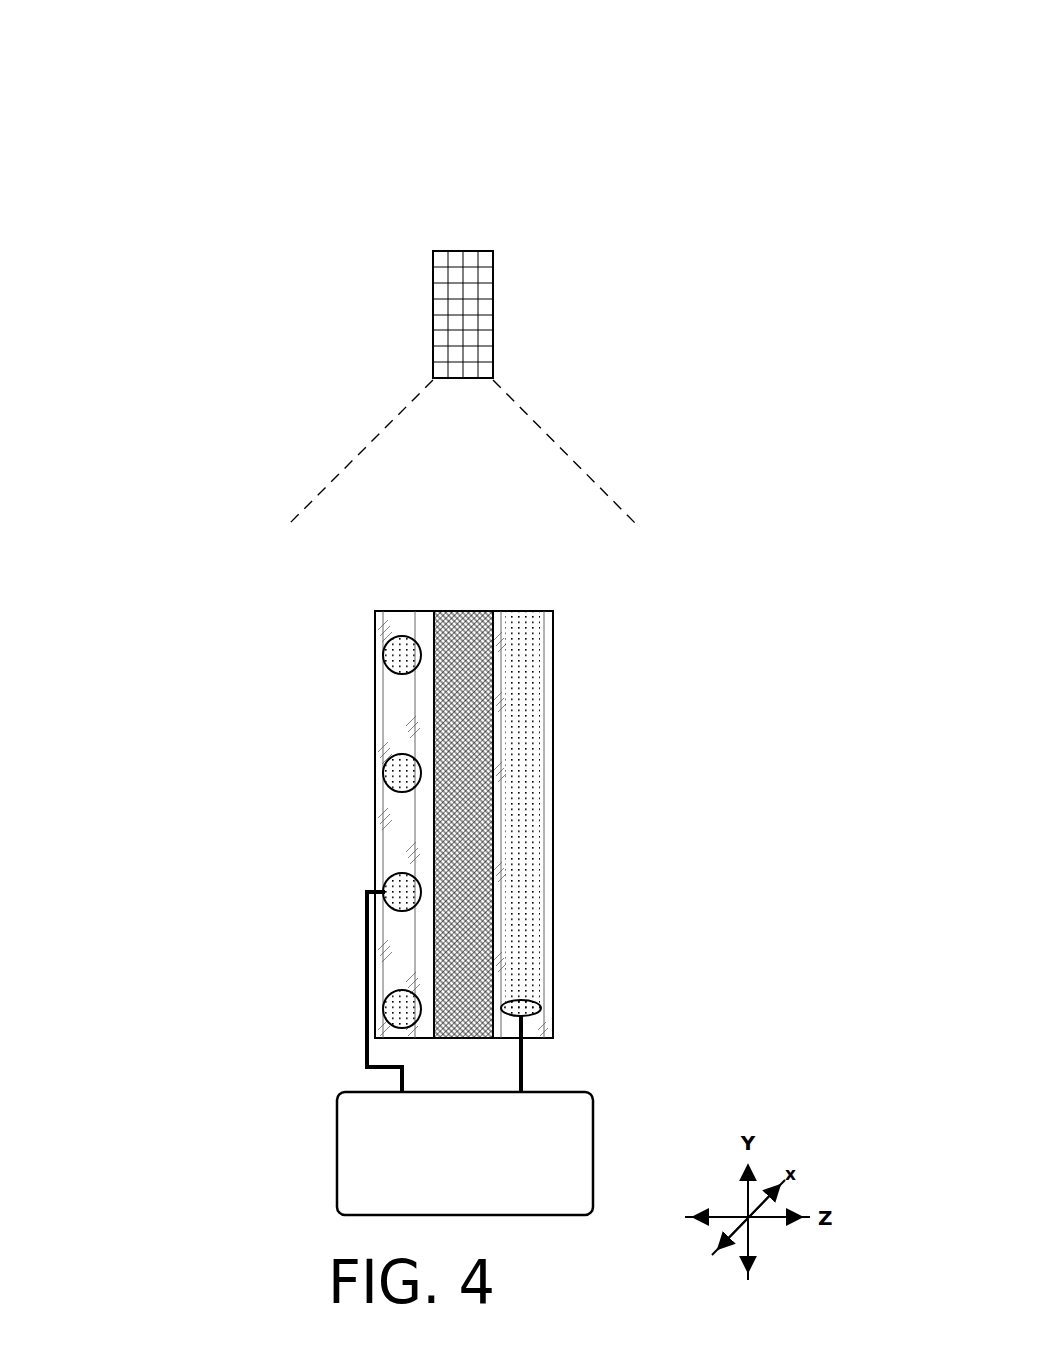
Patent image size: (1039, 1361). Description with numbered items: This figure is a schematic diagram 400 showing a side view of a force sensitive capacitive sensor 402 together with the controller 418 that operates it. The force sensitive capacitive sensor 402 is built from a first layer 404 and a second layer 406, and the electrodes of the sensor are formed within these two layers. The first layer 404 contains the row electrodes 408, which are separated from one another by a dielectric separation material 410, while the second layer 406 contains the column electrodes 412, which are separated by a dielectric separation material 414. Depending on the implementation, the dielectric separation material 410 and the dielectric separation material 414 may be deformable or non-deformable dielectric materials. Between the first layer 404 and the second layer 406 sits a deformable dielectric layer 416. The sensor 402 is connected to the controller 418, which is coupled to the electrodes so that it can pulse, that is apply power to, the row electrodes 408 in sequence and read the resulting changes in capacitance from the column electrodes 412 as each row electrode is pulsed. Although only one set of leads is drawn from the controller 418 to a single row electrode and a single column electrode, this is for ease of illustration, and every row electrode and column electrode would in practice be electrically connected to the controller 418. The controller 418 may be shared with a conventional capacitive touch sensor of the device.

The schematic diagram 400 is at (80, 30).
The force sensitive capacitive sensor 402 is at (464, 263).
The first layer 404 is at (375, 595).
The second layer 406 is at (493, 595).
The row electrodes 408 is at (400, 658).
The dielectric separation material 410 is at (395, 710).
The column electrodes 412 is at (542, 753).
The dielectric separation material 414 is at (530, 1032).
The deformable dielectric layer 416 is at (468, 915).
The controller 418 is at (465, 1053).